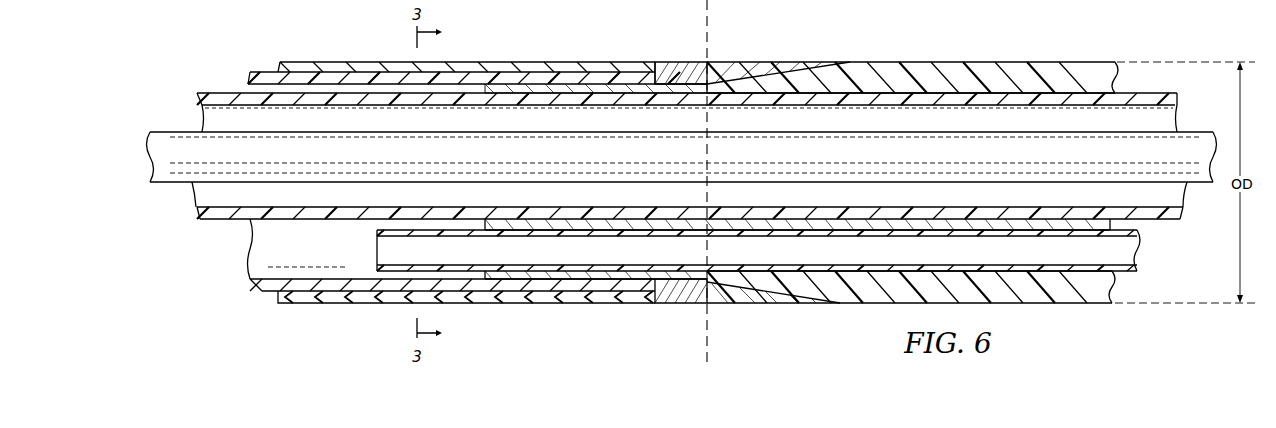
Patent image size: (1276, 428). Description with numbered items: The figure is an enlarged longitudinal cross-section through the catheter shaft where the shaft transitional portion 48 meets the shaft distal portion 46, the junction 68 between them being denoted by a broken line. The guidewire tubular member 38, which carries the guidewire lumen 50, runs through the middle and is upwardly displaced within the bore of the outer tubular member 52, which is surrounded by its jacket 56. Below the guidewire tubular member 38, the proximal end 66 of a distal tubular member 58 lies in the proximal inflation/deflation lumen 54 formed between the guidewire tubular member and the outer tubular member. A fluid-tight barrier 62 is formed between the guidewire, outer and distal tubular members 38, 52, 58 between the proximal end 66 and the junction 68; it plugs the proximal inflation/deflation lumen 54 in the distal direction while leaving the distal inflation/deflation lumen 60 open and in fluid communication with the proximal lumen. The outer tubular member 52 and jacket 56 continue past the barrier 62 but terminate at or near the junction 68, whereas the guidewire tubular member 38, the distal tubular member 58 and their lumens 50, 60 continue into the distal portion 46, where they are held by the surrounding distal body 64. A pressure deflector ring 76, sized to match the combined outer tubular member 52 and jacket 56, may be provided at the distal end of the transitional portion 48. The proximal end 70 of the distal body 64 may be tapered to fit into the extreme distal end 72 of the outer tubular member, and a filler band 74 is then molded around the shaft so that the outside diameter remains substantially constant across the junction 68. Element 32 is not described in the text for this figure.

The inner tubular member 32 is at (172, 131).
The guidewire tubular member 38 is at (229, 93).
The shaft distal portion 46 is at (982, 42).
The shaft transitional portion 48 is at (573, 43).
The guidewire lumen 50 is at (196, 195).
The outer tubular member 52 is at (269, 291).
The proximal inflation/deflation lumen 54 is at (262, 253).
The jacket 56 is at (346, 303).
The distal tubular member 58 is at (1128, 276).
The distal inflation/deflation lumen 60 is at (1124, 253).
The fluid-tight barrier 62 is at (485, 282).
The distal body 64 is at (1060, 304).
The proximal end of distal tubular member 66 is at (377, 233).
The junction 68 is at (705, 340).
The proximal end of distal body 70 is at (790, 304).
The extreme distal end of outer tubular member 72 is at (716, 292).
The filler band 74 is at (752, 62).
The pressure deflector ring 76 is at (679, 62).